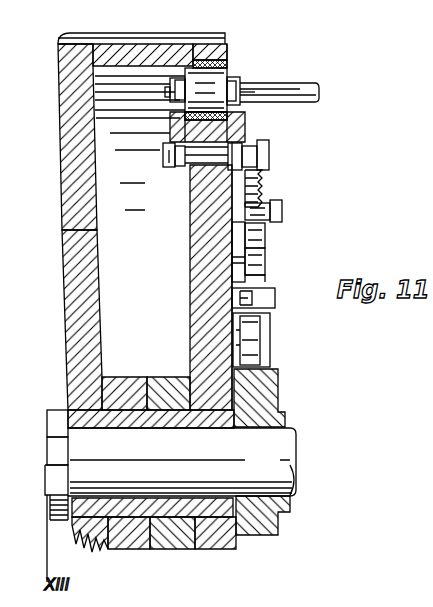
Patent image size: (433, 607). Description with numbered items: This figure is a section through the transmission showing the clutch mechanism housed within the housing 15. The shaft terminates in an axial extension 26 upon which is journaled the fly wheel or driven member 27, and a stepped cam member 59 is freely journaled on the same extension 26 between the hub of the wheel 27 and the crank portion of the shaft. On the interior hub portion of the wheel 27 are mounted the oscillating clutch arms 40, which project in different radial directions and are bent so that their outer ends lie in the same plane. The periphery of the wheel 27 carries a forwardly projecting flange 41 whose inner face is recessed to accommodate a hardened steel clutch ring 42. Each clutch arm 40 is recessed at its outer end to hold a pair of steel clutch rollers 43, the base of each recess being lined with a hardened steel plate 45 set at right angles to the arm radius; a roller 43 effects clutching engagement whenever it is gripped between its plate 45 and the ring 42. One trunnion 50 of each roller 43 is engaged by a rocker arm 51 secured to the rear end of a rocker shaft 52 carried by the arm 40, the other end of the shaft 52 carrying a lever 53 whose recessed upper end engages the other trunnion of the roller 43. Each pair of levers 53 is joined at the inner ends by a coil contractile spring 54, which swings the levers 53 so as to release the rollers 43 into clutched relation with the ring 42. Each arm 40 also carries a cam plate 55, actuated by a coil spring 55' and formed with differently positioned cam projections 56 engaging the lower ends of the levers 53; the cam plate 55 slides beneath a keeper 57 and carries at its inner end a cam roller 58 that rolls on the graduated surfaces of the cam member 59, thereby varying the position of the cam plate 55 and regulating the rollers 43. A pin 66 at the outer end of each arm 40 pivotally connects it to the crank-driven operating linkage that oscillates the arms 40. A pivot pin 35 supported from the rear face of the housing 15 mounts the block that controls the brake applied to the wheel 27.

The housing 15 is at (236, 546).
The axial extension 26 is at (282, 456).
The fly wheel or driven member 27 is at (97, 312).
The pivot pin 35 is at (191, 508).
The oscillating clutch arms 40 is at (195, 246).
The flange 41 is at (228, 54).
The clutch ring 42 is at (193, 68).
The clutch rollers 43 is at (232, 90).
The plate 45 is at (175, 128).
The trunnion 50 is at (248, 92).
The collar 51 is at (178, 78).
The rocker shaft 52 is at (166, 165).
The lever 53 is at (262, 270).
The coil contractile spring 54 is at (278, 205).
The cam plate 55 is at (285, 272).
The coil spring 55' is at (291, 172).
The cam projections 56 is at (268, 237).
The keeper 57 is at (280, 300).
The cam roller 58 is at (268, 345).
The stepped cam member 59 is at (259, 527).
The pin 66 is at (319, 90).